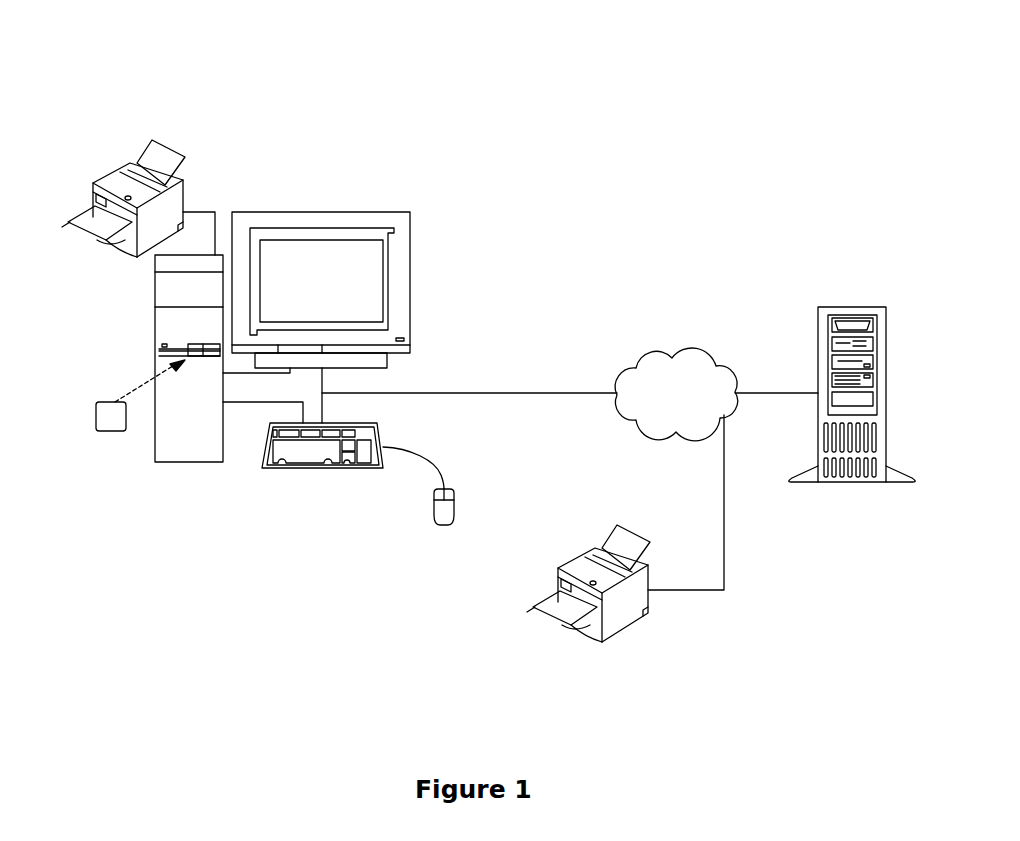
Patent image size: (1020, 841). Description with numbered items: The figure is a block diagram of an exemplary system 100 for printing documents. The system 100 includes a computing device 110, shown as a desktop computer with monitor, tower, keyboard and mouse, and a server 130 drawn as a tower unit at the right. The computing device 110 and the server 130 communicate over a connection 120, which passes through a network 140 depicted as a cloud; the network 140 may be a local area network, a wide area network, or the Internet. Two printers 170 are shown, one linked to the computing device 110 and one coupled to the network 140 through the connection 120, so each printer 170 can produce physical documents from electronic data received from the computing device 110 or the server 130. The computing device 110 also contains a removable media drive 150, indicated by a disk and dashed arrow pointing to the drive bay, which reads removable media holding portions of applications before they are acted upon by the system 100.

The system 100 is at (198, 75).
The computing device 110 is at (321, 212).
The connection 120 is at (570, 481).
The server 130 is at (851, 307).
The network 140 is at (693, 403).
The removable media drive 150 is at (140, 408).
The printer 170 is at (67, 220).